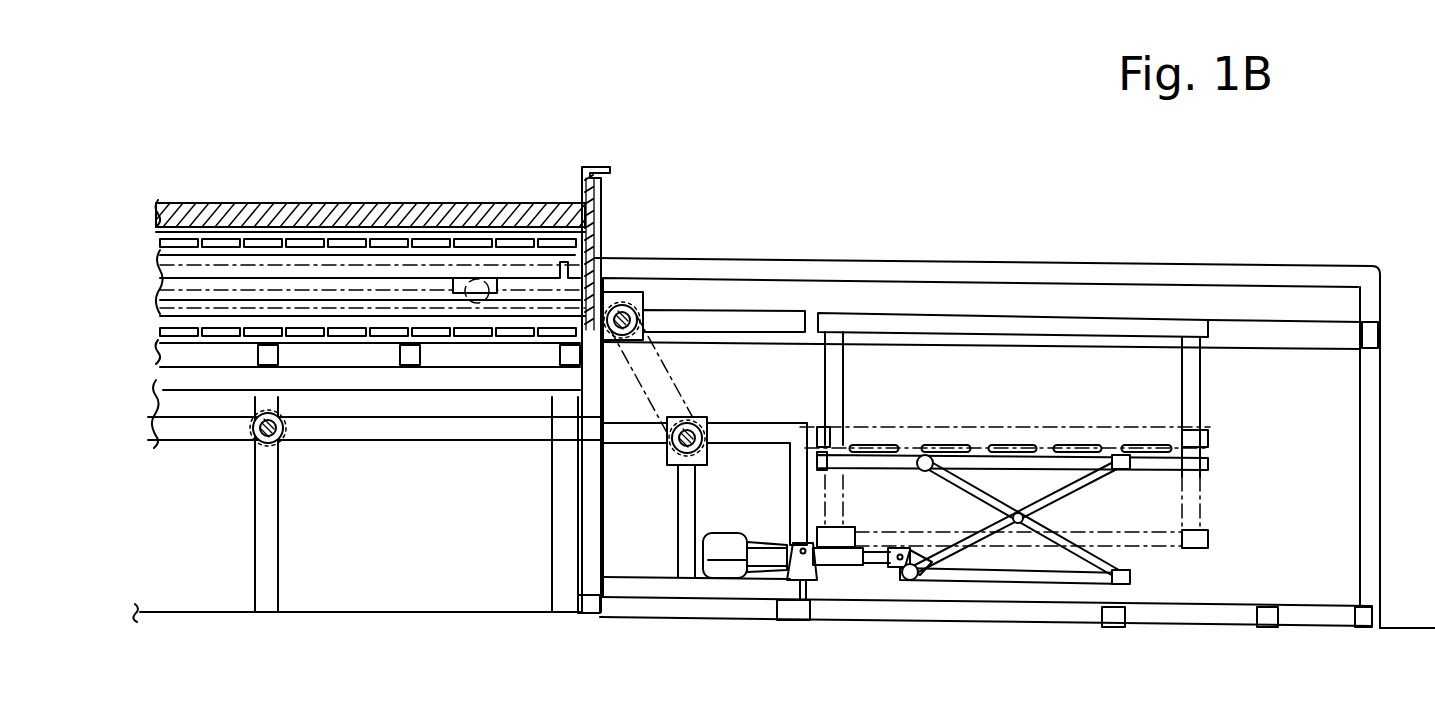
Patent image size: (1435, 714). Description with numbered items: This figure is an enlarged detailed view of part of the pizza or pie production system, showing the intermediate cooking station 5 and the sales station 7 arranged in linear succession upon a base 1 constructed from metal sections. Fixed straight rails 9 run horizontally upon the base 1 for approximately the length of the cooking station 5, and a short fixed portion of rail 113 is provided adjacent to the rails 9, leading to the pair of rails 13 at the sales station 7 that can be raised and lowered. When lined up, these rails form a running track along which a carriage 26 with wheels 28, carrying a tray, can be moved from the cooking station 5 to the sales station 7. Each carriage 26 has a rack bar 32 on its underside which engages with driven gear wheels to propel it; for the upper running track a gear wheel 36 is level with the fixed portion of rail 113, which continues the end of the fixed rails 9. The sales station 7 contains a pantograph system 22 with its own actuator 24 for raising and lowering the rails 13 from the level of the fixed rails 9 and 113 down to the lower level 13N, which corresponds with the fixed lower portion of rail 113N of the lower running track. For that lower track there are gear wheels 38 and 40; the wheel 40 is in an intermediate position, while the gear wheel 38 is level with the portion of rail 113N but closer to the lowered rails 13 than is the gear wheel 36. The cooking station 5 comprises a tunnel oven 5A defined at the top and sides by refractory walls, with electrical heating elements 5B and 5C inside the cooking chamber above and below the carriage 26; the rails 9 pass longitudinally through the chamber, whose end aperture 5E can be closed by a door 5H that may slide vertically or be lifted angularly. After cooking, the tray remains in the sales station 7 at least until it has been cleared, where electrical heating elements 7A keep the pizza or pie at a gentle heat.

The base 1 is at (1341, 473).
The intermediate cooking station 5 is at (585, 115).
The tunnel oven 5A is at (138, 256).
The electrical heating element 5B is at (341, 240).
The electrical heating element 5C is at (350, 333).
The end aperture 5E is at (590, 273).
The door 5H is at (606, 168).
The sales station 7 is at (1377, 193).
The electrical heating elements 7A is at (1070, 445).
The fixed straight rails 9 is at (511, 310).
The rails 13 is at (899, 318).
The lower level of rails 13N is at (952, 425).
The pantograph system 22 is at (1073, 525).
The actuator 24 is at (718, 583).
The carriage 26 is at (288, 270).
The wheels 28 is at (470, 263).
The rack bar 32 is at (634, 290).
The gear wheels 36 is at (647, 340).
The gear wheels 38 is at (680, 455).
The gear wheel 40 is at (260, 440).
The fixed portion of rail 113 is at (698, 317).
The fixed portion of rail 113N is at (753, 423).